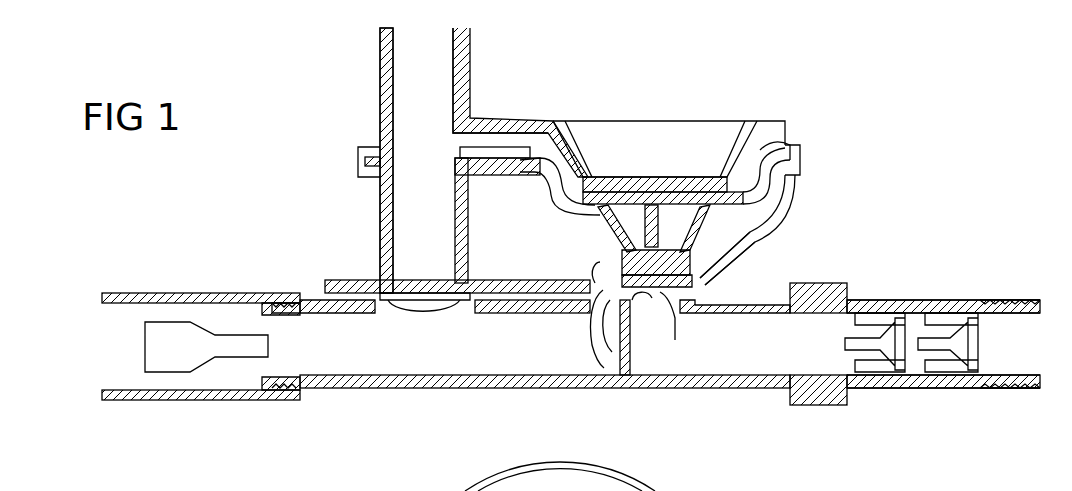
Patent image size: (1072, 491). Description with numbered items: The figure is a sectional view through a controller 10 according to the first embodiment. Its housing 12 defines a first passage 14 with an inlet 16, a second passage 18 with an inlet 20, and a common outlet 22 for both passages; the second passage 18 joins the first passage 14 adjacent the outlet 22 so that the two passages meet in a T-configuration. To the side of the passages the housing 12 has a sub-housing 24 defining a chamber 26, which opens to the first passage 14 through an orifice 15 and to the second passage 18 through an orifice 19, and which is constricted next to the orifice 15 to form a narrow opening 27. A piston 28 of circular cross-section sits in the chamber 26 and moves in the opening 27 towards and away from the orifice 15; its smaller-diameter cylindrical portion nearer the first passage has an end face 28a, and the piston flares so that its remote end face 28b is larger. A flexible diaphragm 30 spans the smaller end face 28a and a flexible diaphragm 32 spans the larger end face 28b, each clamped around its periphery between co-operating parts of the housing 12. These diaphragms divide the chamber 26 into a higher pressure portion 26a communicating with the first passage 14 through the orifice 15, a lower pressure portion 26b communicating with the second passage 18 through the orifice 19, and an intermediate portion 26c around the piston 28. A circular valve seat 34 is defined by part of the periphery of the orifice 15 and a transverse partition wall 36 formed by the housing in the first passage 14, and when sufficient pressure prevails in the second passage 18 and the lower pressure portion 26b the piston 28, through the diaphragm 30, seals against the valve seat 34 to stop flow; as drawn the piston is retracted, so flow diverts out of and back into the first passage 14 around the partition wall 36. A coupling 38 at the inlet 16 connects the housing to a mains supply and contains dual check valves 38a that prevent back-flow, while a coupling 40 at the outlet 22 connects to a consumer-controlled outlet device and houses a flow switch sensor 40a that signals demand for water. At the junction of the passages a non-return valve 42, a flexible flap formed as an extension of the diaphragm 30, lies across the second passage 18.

The controller 10 is at (567, 80).
The housing 12 is at (478, 392).
The first passage 14 is at (778, 348).
The orifice 15 is at (647, 318).
The inlet 16 is at (816, 344).
The second passage 18 is at (410, 95).
The orifice 19 is at (497, 143).
The inlet 20 is at (412, 70).
The common outlet 22 is at (297, 350).
The sub-housing 24 is at (750, 106).
The chamber 26 is at (770, 182).
The higher pressure portion 26a is at (702, 284).
The lower pressure portion 26b is at (772, 138).
The intermediate portion 26c is at (569, 203).
The narrow opening 27 is at (628, 250).
The piston 28 is at (628, 256).
The end face 28a is at (670, 256).
The end face 28b is at (628, 208).
The flexible diaphragm 30 is at (603, 292).
The flexible diaphragm 32 is at (548, 183).
The valve seat 34 is at (640, 300).
The partition wall 36 is at (626, 352).
The coupling 38 is at (1010, 388).
The dual check valves 38a is at (915, 337).
The coupling 40 is at (163, 401).
The flow switch sensor 40a is at (175, 343).
The non-return valve 42 is at (422, 300).